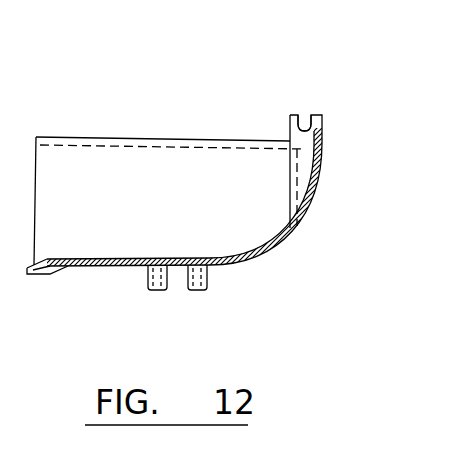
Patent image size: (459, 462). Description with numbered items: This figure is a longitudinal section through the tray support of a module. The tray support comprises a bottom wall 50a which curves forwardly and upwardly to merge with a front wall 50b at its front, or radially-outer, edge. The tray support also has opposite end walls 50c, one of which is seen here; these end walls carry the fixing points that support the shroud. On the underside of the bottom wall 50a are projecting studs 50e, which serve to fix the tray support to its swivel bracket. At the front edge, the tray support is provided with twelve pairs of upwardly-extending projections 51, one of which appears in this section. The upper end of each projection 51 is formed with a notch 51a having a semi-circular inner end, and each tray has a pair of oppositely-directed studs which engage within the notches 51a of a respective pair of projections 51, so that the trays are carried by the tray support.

The bottom wall 50a is at (115, 262).
The front wall 50b is at (313, 197).
The end wall 50c is at (98, 172).
The projecting studs 50e is at (157, 288).
The upwardly-extending projection 51 is at (324, 128).
The notch 51a is at (303, 113).